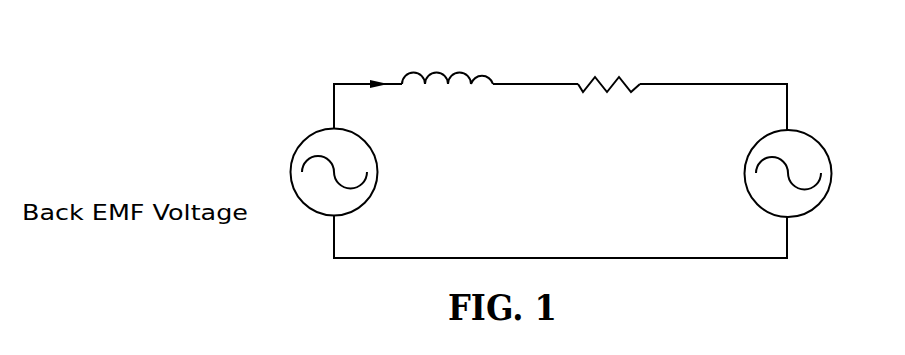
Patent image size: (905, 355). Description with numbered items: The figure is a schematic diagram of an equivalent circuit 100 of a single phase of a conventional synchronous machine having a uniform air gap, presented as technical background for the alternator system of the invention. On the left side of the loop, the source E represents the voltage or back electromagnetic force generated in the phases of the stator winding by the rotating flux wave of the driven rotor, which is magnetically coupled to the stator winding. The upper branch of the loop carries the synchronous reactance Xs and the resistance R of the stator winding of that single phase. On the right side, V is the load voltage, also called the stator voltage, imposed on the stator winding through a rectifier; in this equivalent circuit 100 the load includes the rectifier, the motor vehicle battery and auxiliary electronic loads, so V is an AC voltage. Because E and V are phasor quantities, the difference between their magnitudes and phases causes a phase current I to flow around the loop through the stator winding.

The equivalent circuit 100 is at (315, 73).
The back EMF voltage E is at (323, 172).
The synchronous reactance Xs is at (447, 96).
The resistance R is at (609, 97).
The phase current I is at (379, 71).
The load voltage V is at (808, 175).